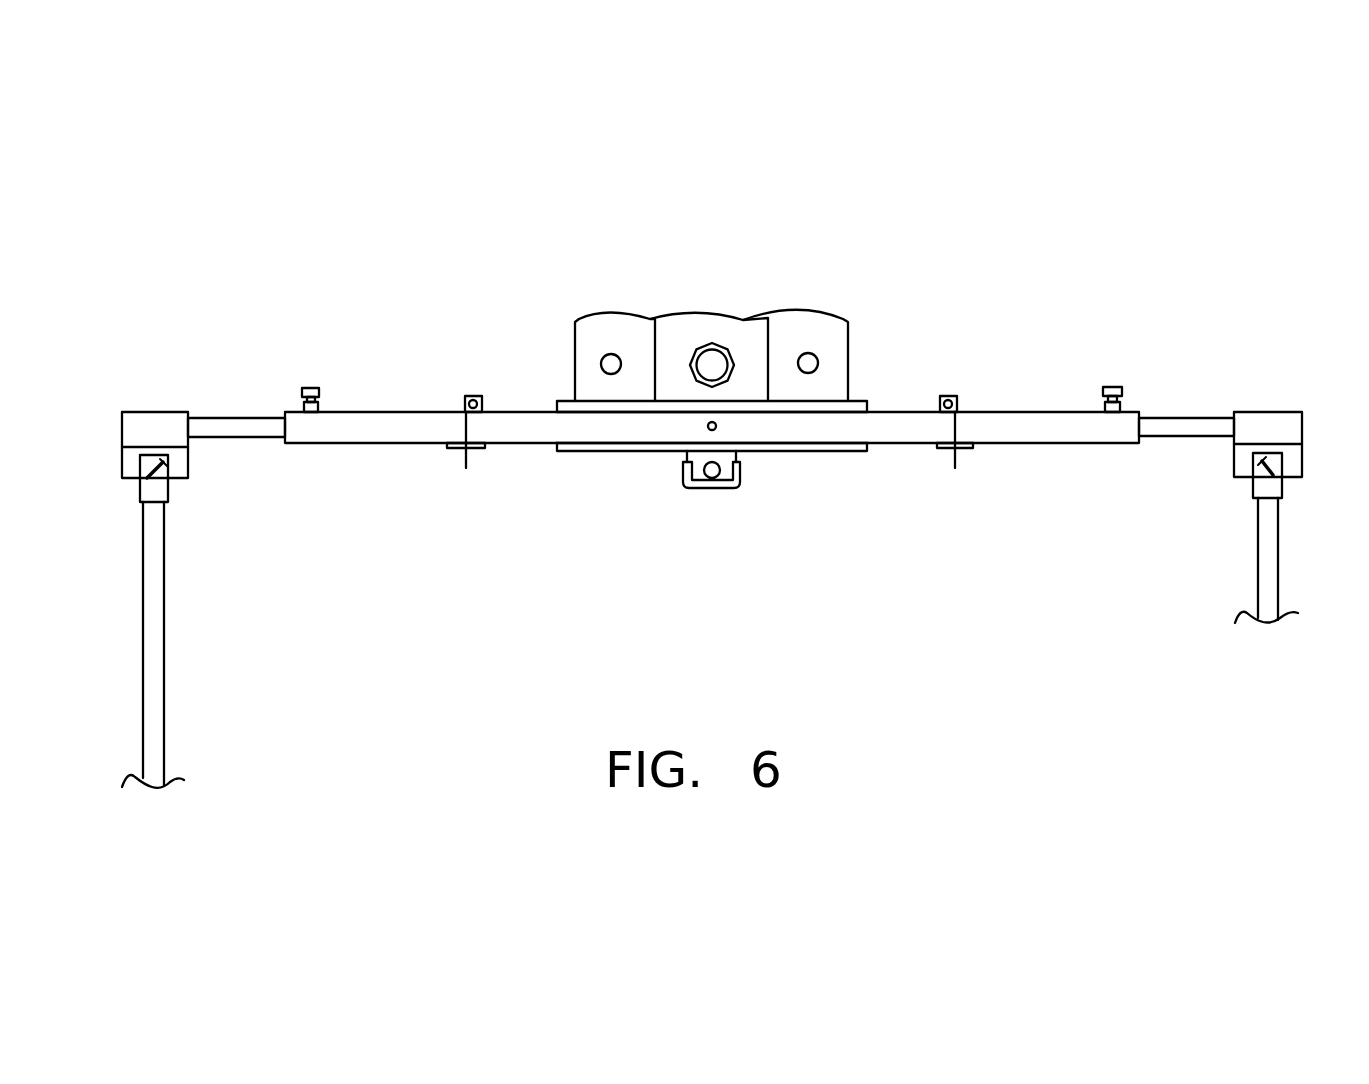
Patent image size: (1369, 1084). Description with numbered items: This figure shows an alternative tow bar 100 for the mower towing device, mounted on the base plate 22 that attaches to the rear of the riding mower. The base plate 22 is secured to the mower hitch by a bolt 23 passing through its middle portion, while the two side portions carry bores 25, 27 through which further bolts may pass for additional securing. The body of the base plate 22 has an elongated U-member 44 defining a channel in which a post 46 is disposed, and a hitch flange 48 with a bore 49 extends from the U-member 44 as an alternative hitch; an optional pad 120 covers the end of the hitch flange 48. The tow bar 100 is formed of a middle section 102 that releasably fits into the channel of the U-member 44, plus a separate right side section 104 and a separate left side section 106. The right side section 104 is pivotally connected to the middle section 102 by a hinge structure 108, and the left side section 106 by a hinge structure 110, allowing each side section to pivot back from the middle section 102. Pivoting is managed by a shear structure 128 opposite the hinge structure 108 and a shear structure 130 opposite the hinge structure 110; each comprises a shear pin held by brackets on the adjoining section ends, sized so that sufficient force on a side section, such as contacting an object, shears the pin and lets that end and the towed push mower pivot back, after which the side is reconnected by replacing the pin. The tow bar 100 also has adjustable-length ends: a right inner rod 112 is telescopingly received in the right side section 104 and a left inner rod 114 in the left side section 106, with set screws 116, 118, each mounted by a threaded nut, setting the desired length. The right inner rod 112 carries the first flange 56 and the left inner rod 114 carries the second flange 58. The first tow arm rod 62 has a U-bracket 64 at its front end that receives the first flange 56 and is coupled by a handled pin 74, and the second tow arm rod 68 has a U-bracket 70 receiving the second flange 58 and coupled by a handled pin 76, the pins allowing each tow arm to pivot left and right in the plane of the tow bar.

The base plate 22 is at (897, 283).
The bolt 23 is at (712, 348).
The bore 25 is at (611, 352).
The bore 27 is at (814, 350).
The U-member 44 is at (823, 452).
The post 46 is at (708, 431).
The hitch flange 48 is at (733, 487).
The bore 49 is at (683, 489).
The first flange 56 is at (1243, 458).
The second flange 58 is at (130, 465).
The rod 62 is at (1267, 582).
The U-bracket 64 is at (1282, 490).
The rod 68 is at (167, 614).
The U-bracket 70 is at (163, 492).
The handled pin 74 is at (1250, 487).
The handled pin 76 is at (152, 464).
The tow bar 100 is at (939, 311).
The middle section 102 is at (605, 427).
The right side section 104 is at (1055, 425).
The left side section 106 is at (380, 430).
The hinge structure 108 is at (955, 468).
The hinge structure 110 is at (467, 450).
The right inner rod 112 is at (1168, 422).
The left inner rod 114 is at (217, 427).
The set screw 116 is at (1110, 385).
The set screw 118 is at (312, 388).
The pad 120 is at (713, 490).
The shear structure 128 is at (940, 405).
The shear structure 130 is at (483, 405).